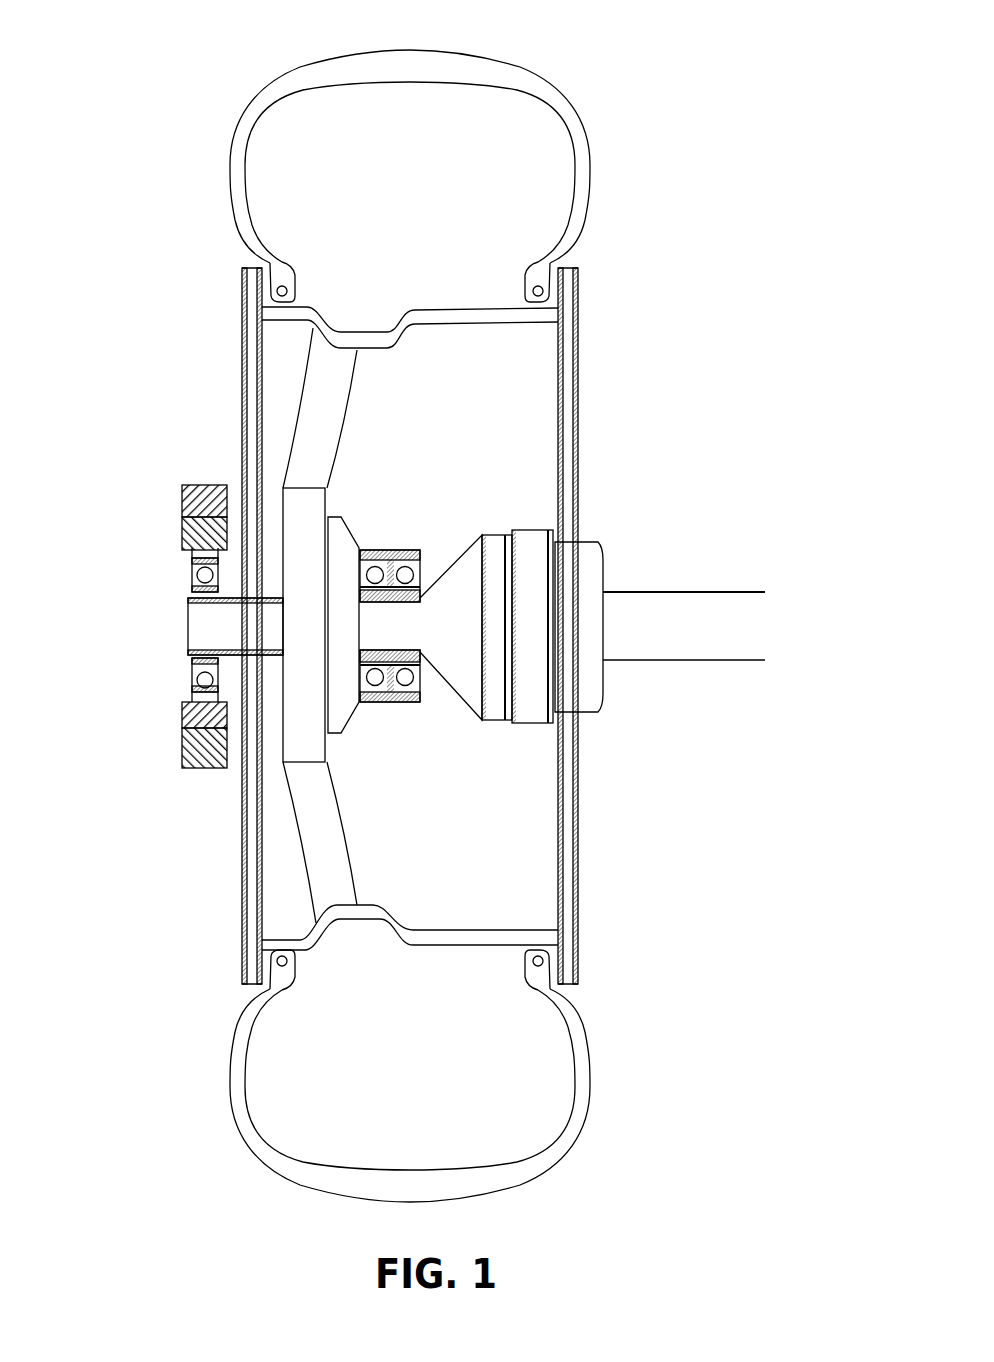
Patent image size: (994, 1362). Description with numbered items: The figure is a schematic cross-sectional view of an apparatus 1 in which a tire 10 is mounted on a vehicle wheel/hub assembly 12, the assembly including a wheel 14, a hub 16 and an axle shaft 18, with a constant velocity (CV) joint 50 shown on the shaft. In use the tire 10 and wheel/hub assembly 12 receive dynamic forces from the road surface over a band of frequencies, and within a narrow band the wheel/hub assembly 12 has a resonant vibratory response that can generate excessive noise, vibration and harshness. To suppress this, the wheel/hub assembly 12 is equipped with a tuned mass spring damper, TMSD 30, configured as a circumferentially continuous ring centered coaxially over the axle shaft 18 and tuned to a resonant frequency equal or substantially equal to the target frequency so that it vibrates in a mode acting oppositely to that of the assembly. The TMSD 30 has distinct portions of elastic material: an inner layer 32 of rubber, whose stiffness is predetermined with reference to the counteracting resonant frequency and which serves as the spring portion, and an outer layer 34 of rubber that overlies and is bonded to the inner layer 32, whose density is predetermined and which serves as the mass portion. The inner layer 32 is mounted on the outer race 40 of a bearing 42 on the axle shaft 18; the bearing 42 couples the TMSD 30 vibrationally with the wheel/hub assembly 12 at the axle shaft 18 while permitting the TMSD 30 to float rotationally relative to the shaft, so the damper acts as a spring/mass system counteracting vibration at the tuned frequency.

The apparatus 1 is at (140, 70).
The tire 10 is at (300, 64).
The wheel/hub assembly 12 is at (214, 301).
The wheel 14 is at (248, 430).
The hub 16 is at (352, 717).
The axle shaft 18 is at (688, 653).
The TMSD 30 is at (196, 466).
The inner layer 32 is at (182, 718).
The outer layer 34 is at (182, 748).
The outer race 40 is at (193, 695).
The bearing 42 is at (193, 668).
The constant velocity (CV) joint 50 is at (605, 580).